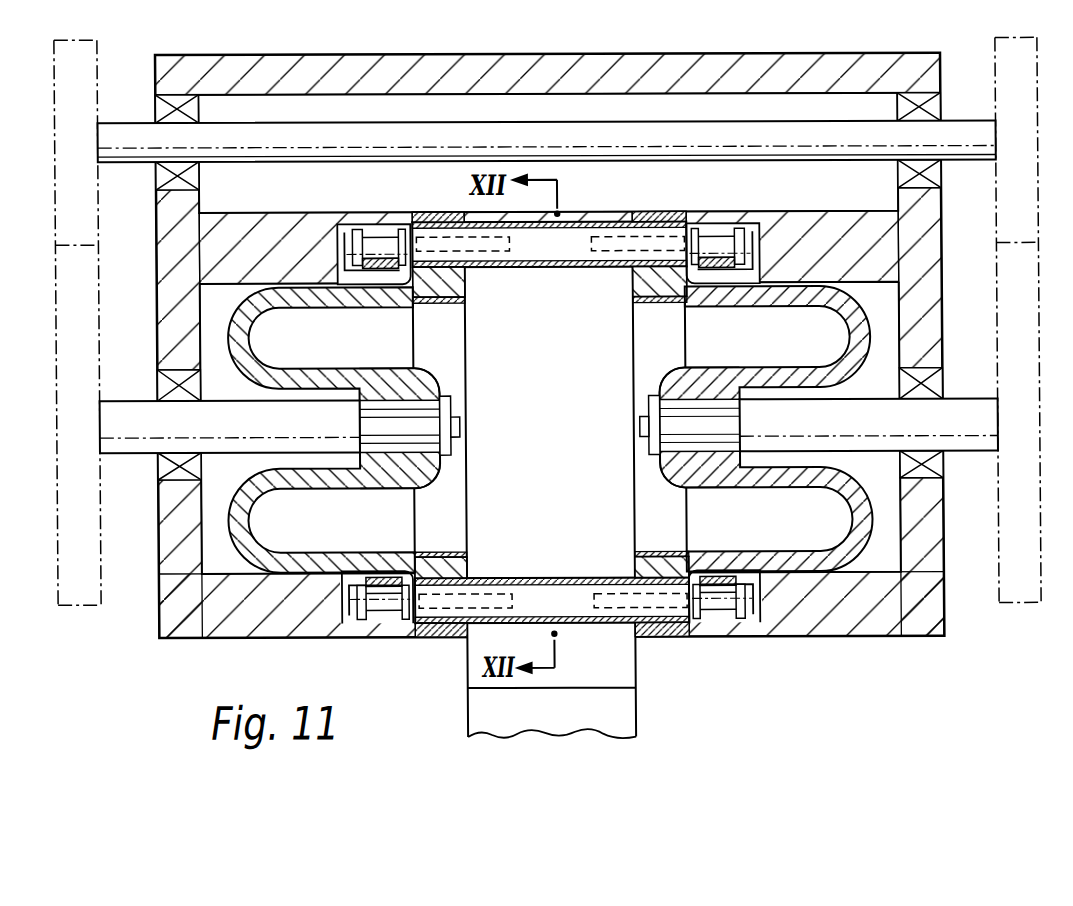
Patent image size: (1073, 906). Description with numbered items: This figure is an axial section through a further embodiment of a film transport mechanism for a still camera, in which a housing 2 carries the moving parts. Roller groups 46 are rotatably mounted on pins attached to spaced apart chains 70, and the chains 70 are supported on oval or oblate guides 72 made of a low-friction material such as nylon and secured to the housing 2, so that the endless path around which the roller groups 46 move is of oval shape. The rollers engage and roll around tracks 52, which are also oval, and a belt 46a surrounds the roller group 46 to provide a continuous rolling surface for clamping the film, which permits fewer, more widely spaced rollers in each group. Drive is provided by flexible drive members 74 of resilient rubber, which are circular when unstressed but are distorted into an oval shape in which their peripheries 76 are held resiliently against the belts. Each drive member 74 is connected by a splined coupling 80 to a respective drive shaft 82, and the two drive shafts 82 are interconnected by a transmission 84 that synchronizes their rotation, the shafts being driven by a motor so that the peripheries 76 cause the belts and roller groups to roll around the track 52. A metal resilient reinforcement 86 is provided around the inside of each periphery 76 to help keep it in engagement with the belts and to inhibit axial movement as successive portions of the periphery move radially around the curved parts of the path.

The housing 2 is at (203, 630).
The roller group 46 is at (549, 592).
The belt 46a is at (486, 620).
The track 52 is at (428, 221).
The chain 70 is at (381, 237).
The guide 72 is at (369, 262).
The flexible drive member 74 is at (322, 382).
The periphery 76 is at (447, 286).
The splined coupling 80 is at (426, 416).
The drive shaft 82 is at (262, 420).
The transmission 84 is at (116, 133).
The metal resilient reinforcement 86 is at (453, 302).